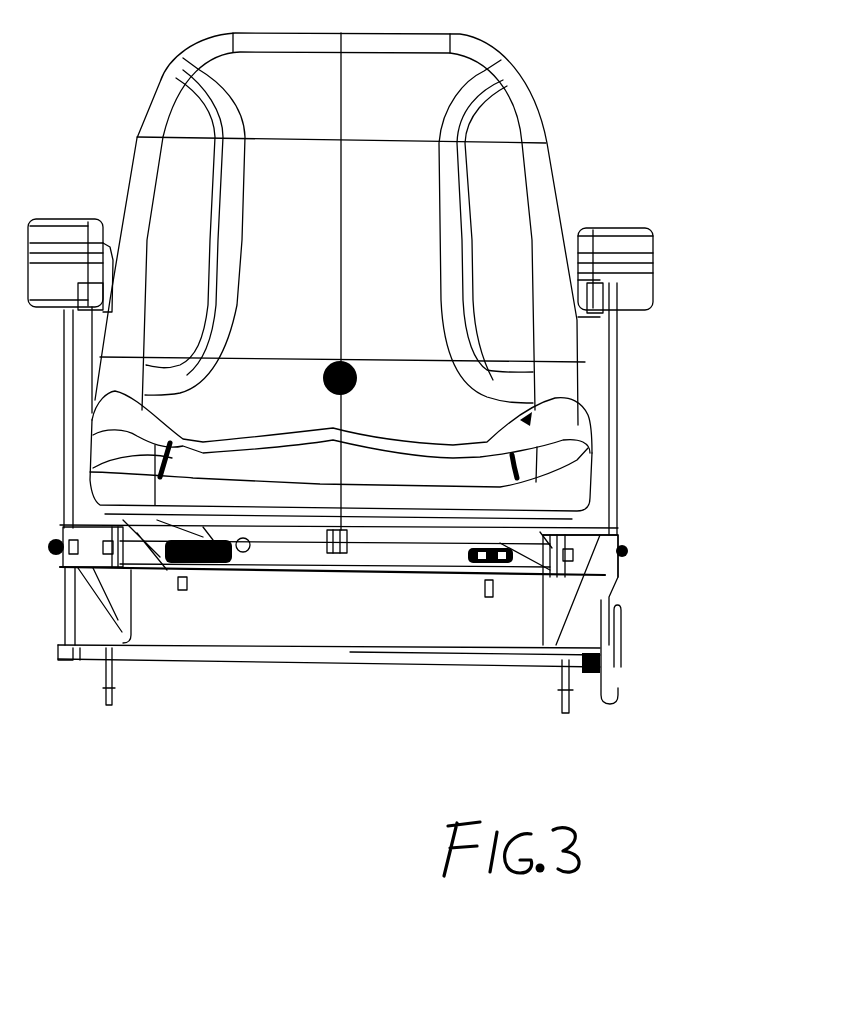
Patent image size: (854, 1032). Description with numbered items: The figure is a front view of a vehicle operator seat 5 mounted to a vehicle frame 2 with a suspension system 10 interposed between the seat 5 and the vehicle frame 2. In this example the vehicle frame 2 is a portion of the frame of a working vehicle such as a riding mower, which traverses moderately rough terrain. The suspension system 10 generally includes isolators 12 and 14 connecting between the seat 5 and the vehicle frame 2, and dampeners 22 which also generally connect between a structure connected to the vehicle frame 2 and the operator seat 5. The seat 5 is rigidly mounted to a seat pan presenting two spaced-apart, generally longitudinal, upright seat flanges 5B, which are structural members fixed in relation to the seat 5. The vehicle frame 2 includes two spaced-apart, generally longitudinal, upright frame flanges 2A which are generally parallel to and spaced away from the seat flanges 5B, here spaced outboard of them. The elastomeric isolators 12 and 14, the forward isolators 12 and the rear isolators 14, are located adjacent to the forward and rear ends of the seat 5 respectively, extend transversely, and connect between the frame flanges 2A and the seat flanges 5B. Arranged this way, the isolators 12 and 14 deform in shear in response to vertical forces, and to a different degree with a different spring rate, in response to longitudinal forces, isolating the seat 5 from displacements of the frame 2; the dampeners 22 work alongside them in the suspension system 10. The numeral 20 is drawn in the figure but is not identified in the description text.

The vehicle frame 2 is at (63, 563).
The frame flanges 2A is at (620, 577).
The operator seat 5 is at (332, 237).
The seat flanges 5B is at (210, 592).
The suspension system 10 is at (399, 377).
The forward isolators 12 is at (137, 568).
The rear isolators 14 is at (582, 550).
The armrest support post 20 is at (620, 370).
The dampeners 22 is at (587, 343).